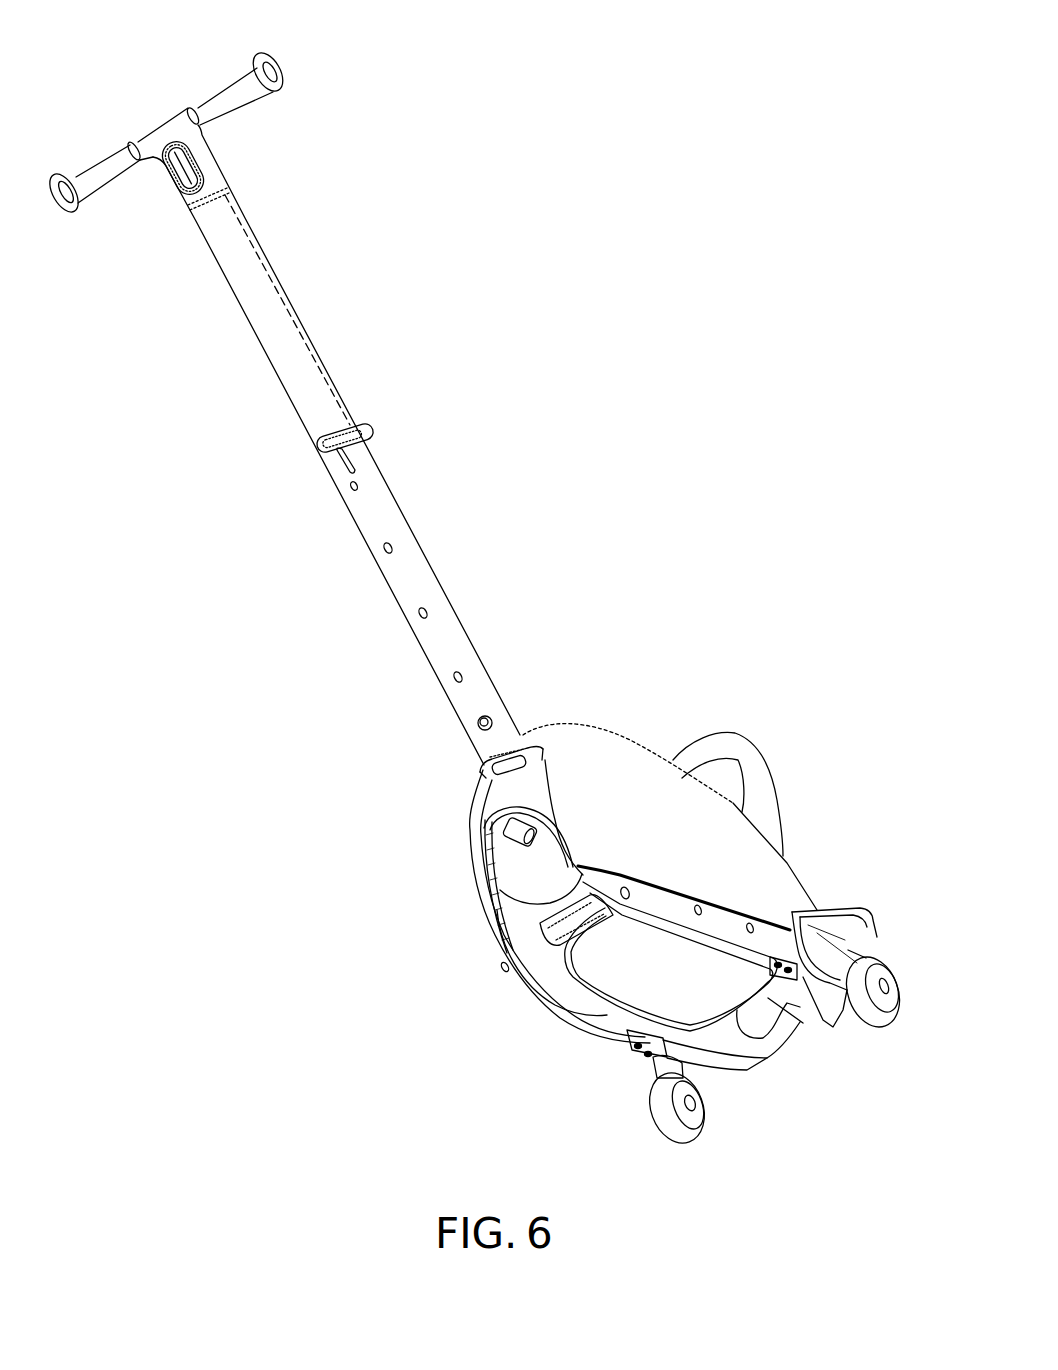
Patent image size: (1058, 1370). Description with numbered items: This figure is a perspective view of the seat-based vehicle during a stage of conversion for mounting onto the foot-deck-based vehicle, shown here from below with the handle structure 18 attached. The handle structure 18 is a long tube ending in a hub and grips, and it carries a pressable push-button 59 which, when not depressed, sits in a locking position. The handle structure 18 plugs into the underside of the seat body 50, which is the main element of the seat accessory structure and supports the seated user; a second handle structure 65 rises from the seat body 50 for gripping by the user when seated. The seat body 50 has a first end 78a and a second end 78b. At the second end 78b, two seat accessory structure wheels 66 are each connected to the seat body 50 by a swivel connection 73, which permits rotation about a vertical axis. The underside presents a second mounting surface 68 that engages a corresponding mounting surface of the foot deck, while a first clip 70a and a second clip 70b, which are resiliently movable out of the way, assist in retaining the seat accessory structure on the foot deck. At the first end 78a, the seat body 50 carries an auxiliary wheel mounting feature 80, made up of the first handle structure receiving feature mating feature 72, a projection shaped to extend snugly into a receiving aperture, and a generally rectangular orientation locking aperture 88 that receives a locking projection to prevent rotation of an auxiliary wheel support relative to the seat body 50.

The handle structure 18 is at (242, 268).
The seat body 50 is at (667, 785).
The push-button 59 is at (478, 721).
The second handle structure 65 is at (753, 760).
The seat accessory structure wheel 66 is at (698, 1137).
The second mounting surface 68 is at (607, 1008).
The first clip 70a is at (650, 1055).
The second clip 70b is at (768, 978).
The first handle structure receiving feature mating feature 72 is at (503, 823).
The swivel connection 73 is at (880, 940).
The first end 78a is at (483, 893).
The second end 78b is at (767, 892).
The auxiliary wheel mounting feature 80 is at (520, 850).
The orientation locking aperture 88 is at (570, 917).